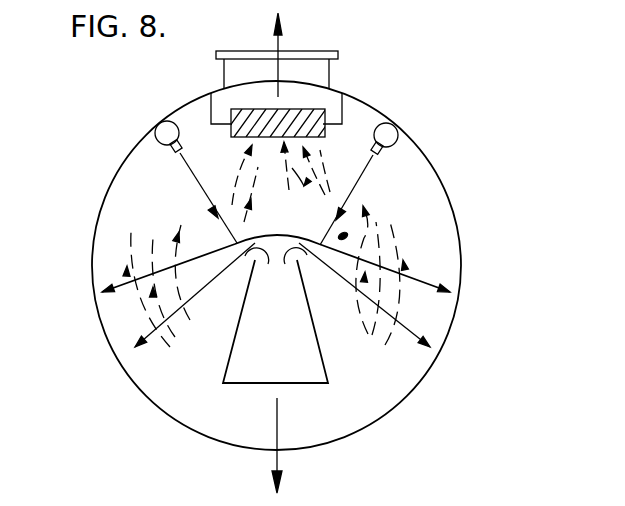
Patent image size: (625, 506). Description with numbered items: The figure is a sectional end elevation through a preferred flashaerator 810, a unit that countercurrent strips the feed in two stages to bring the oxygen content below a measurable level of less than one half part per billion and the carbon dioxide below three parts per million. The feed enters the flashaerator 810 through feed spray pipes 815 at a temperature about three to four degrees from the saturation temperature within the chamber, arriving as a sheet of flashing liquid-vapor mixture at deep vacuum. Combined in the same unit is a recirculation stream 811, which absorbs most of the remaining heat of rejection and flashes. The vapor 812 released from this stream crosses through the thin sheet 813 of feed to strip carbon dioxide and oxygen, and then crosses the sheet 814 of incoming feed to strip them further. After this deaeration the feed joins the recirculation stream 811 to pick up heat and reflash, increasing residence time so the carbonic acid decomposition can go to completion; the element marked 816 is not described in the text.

The flashaerator 810 is at (112, 173).
The recirculation stream 811 is at (280, 421).
The vapor 812 is at (165, 210).
The thin sheet of feed 813 is at (198, 283).
The sheet of incoming feed 814 is at (127, 285).
The feed spray pipes 815 is at (166, 128).
The light beam 816 is at (362, 177).